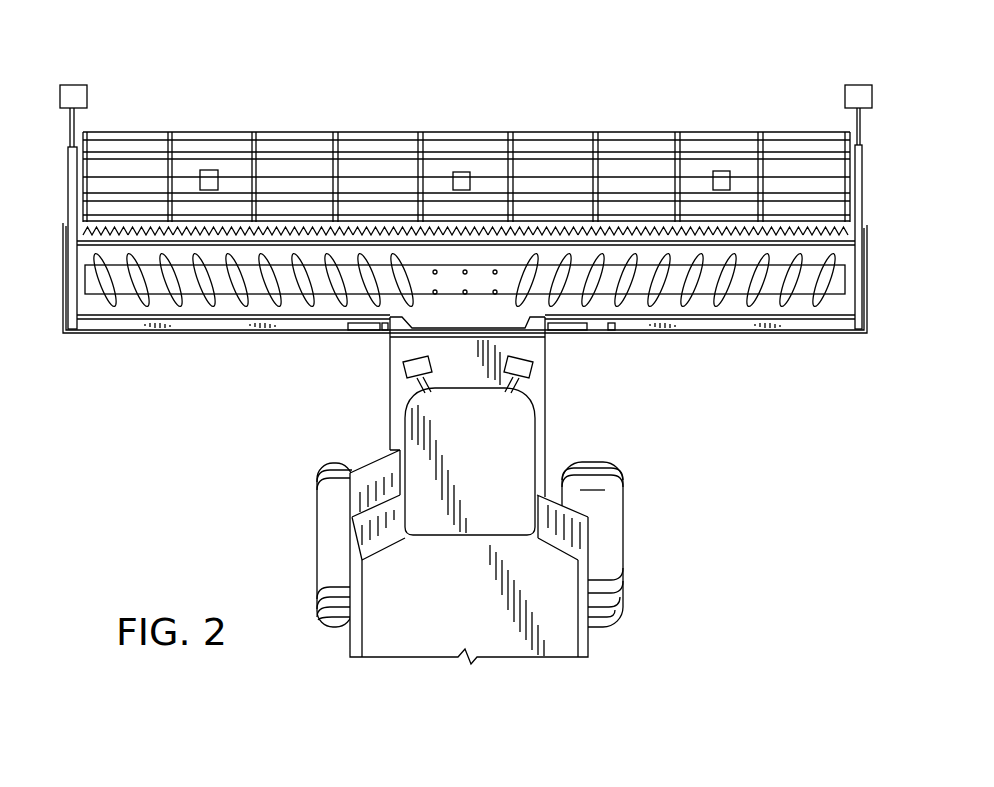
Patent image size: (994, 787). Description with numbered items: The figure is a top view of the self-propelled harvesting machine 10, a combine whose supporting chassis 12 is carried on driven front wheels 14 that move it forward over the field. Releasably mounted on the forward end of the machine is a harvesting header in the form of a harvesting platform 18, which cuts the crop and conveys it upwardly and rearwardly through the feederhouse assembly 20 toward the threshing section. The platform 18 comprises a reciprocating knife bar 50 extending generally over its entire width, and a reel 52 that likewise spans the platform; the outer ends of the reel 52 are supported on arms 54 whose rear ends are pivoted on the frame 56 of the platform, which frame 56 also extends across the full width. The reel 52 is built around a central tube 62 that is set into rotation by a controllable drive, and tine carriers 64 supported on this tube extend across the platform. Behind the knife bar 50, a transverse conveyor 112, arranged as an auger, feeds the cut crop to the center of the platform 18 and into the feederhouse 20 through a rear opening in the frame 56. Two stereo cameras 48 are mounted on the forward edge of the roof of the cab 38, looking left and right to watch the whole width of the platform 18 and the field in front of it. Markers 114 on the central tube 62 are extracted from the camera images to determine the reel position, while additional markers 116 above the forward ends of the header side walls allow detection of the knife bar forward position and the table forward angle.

The self-propelled harvesting machine 10 is at (699, 587).
The supporting chassis 12 is at (567, 660).
The driven front wheels 14 is at (620, 503).
The harvesting platform 18 is at (893, 144).
The feederhouse assembly 20 is at (389, 385).
The cab 38 is at (452, 420).
The stereo cameras 48 is at (403, 360).
The reciprocating knife bar 50 is at (640, 234).
The reel 52 is at (466, 143).
The arms 54 is at (75, 208).
The frame 56 is at (113, 334).
The central tube 62 is at (553, 172).
The tine carriers 64 is at (355, 132).
The transverse conveyor 112 is at (836, 282).
The markers 114 is at (210, 176).
The additional markers 116 is at (73, 86).